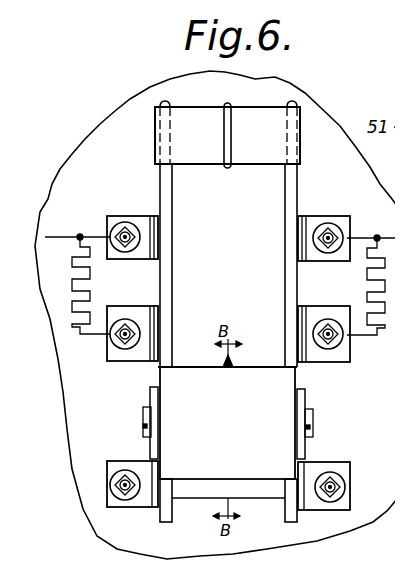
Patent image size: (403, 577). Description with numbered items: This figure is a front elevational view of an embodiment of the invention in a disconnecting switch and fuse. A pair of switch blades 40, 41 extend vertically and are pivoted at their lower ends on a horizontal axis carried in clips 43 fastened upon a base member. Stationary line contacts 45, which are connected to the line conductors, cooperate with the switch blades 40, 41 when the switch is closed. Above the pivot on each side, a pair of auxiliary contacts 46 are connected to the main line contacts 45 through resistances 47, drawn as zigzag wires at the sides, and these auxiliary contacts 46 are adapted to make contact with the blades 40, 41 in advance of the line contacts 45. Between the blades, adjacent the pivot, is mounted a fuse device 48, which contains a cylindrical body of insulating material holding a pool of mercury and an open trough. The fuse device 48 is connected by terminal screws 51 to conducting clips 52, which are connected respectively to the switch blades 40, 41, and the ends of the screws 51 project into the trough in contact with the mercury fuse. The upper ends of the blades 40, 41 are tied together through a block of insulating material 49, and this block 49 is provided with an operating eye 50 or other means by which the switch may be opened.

The switch blade 40 is at (160, 185).
The switch blade 41 is at (297, 196).
The clip 43 is at (143, 503).
The stationary line contact 45 is at (124, 214).
The auxiliary contact 46 is at (138, 350).
The resistance 47 is at (90, 296).
The fuse device 48 is at (283, 403).
The block of insulating material 49 is at (252, 122).
The operating eye 50 is at (227, 118).
The terminal screw 51 is at (145, 428).
The conducting clip 52 is at (304, 450).